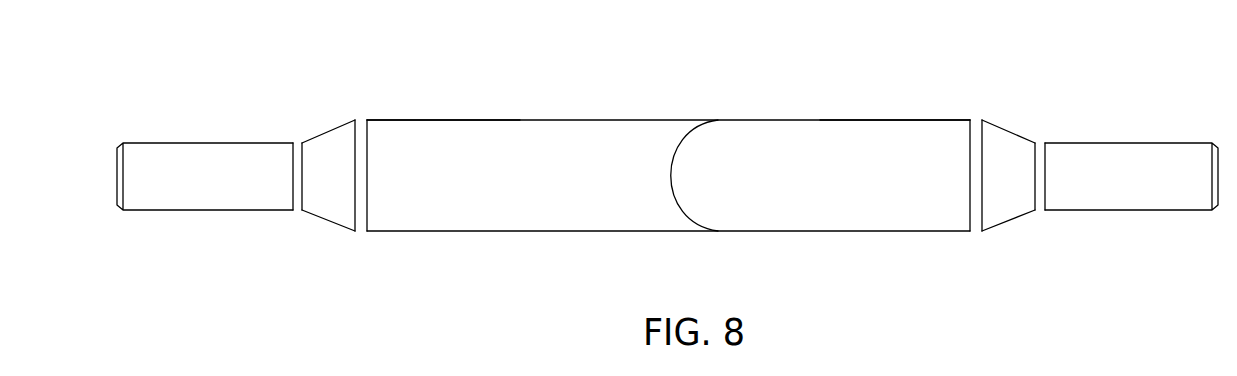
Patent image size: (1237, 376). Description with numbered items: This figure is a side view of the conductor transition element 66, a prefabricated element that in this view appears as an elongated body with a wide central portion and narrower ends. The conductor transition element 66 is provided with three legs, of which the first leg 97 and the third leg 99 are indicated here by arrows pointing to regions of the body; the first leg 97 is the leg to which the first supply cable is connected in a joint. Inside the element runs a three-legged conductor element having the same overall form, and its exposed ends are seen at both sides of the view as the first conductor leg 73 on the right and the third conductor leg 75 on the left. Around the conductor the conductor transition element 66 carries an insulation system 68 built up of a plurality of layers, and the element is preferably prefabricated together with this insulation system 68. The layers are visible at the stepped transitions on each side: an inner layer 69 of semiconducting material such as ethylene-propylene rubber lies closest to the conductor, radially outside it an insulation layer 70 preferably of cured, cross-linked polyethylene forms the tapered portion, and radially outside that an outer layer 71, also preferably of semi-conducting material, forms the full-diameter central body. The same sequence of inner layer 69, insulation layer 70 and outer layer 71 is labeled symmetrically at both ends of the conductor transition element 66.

The conductor transition element 66 is at (667, 182).
The insulation system 68 is at (589, 119).
The inner layer 69 is at (297, 211).
The insulation layer 70 is at (337, 213).
The outer layer 71 is at (362, 226).
The first conductor leg 73 is at (1148, 202).
The third conductor leg 75 is at (212, 198).
The first leg 97 is at (905, 119).
The third leg 99 is at (443, 119).